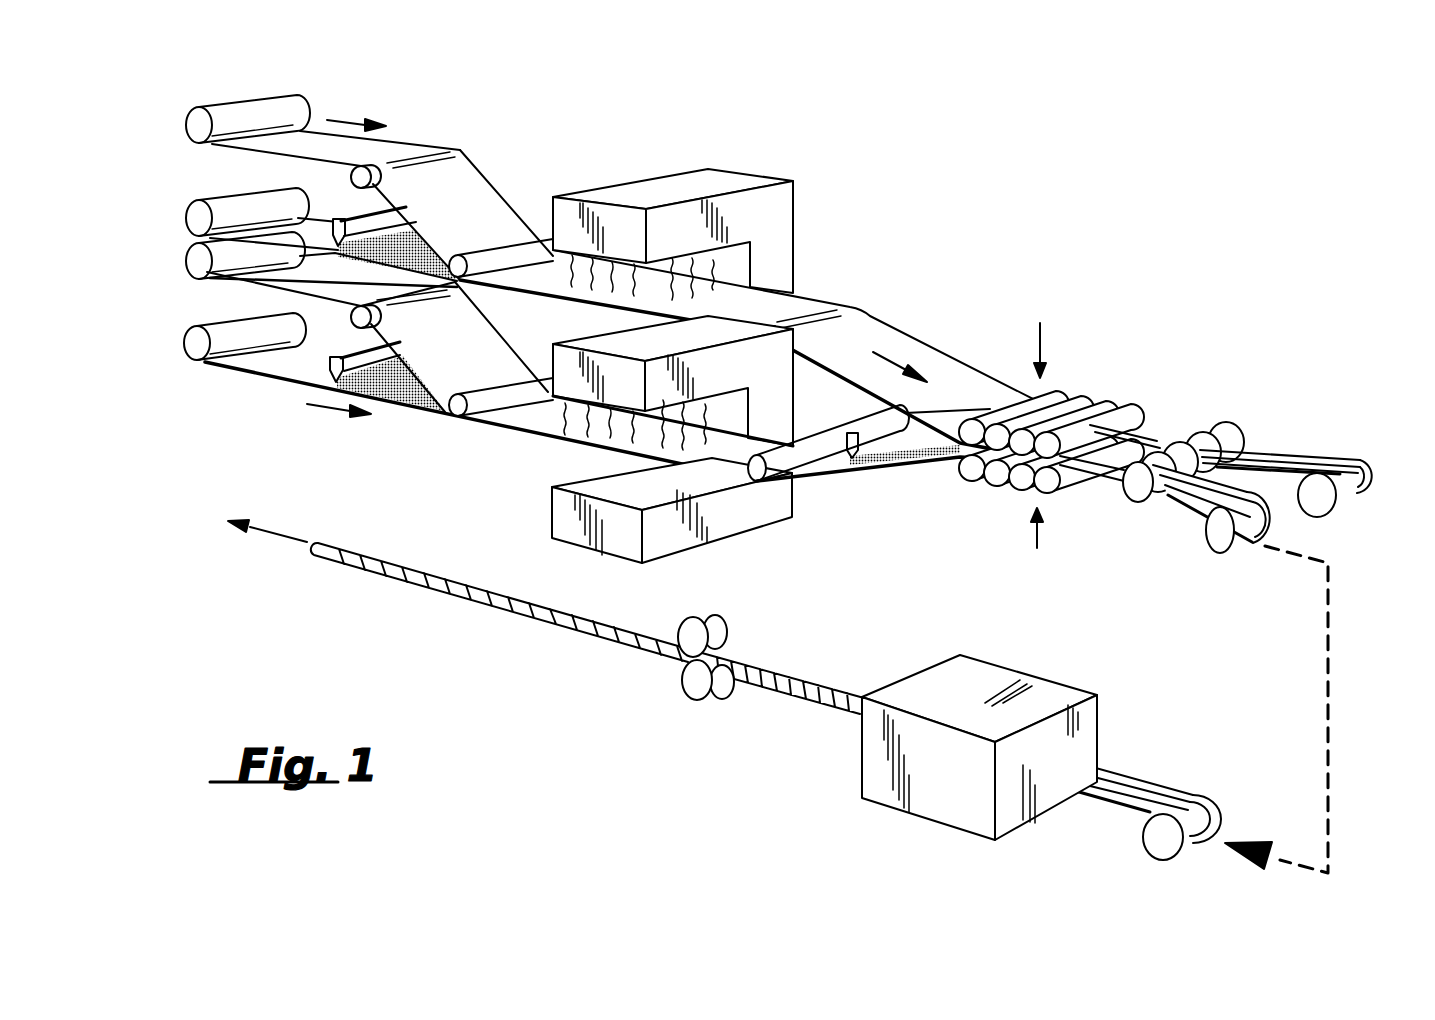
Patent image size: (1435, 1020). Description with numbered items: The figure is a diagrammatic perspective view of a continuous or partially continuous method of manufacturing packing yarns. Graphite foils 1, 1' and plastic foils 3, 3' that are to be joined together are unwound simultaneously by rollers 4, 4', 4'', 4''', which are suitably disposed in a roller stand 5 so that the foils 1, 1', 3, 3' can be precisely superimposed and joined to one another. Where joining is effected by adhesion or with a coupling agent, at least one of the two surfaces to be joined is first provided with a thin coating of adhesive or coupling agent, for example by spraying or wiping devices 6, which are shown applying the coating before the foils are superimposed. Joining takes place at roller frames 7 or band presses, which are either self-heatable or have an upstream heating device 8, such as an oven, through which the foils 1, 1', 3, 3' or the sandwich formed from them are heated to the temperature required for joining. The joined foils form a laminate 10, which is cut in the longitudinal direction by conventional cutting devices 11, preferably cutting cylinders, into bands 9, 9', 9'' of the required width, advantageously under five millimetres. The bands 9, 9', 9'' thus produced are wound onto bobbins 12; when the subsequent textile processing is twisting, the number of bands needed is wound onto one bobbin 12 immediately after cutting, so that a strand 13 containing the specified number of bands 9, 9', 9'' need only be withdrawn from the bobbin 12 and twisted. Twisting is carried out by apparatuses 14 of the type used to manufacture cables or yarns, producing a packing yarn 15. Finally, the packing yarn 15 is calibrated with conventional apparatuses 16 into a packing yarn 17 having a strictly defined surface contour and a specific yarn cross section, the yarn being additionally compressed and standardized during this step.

The graphite foil 1 is at (333, 188).
The graphite foil 1' is at (481, 376).
The plastic foil 3 is at (463, 205).
The plastic foil 3' is at (459, 347).
The roller 4 is at (229, 146).
The roller 4' is at (221, 225).
The roller 4'' is at (218, 269).
The roller 4''' is at (217, 349).
The roller stand 5 is at (318, 97).
The spraying or wiping device 6 is at (335, 218).
The roller frame 7 is at (1122, 385).
The heating device 8 is at (730, 180).
The band 9 is at (1280, 429).
The band 9' is at (1285, 433).
The band 9'' is at (1302, 436).
The laminate 10 is at (1150, 447).
The cutting device 11 is at (1248, 418).
The bobbin 12 is at (1322, 515).
The strand 13 is at (1292, 440).
The twisting apparatus 14 is at (1063, 697).
The packing yarn 15 is at (828, 683).
The calibrating apparatus 16 is at (745, 625).
The calibrated packing yarn 17 is at (583, 627).